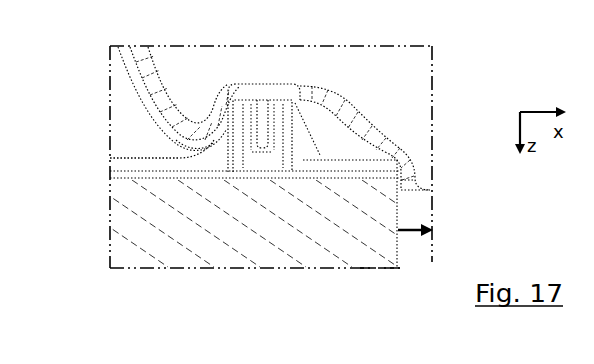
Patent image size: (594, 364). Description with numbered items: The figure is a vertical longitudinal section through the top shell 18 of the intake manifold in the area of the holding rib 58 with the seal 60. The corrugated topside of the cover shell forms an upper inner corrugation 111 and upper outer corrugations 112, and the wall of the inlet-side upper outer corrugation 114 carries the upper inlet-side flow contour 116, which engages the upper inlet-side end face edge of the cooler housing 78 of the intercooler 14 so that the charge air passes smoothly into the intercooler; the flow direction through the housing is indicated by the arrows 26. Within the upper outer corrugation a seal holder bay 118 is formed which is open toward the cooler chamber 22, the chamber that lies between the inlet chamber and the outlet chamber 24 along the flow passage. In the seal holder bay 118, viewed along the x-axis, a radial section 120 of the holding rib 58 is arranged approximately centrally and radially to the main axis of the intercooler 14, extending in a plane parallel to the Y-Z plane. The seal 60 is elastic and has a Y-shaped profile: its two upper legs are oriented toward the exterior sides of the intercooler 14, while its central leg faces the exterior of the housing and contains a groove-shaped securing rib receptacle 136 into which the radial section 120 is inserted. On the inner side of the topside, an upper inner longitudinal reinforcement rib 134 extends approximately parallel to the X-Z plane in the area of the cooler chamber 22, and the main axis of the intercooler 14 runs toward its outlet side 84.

The intercooler 14 is at (126, 235).
The top shell 18 is at (128, 102).
The cooler chamber 22 is at (126, 163).
The outlet chamber 24 is at (430, 266).
The arrows 26 is at (436, 230).
The holding rib 58 is at (262, 104).
The seal 60 is at (260, 162).
The cooler housing 78 is at (140, 172).
The outlet side 84 is at (398, 270).
The upper inner corrugation 111 is at (197, 140).
The upper outer corrugation 112 is at (126, 51).
The inlet-side upper outer corrugation 114 is at (328, 103).
The upper inlet-side flow contour 116 is at (416, 190).
The seal holder bay 118 is at (288, 117).
The radial section 120 is at (304, 97).
The upper inner longitudinal reinforcement rib 134 is at (125, 133).
The securing rib receptacle 136 is at (263, 133).